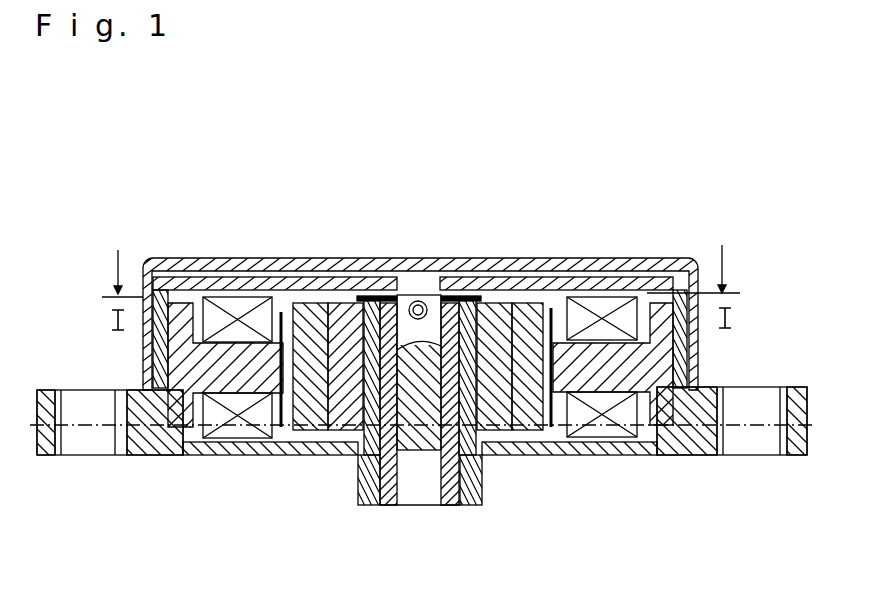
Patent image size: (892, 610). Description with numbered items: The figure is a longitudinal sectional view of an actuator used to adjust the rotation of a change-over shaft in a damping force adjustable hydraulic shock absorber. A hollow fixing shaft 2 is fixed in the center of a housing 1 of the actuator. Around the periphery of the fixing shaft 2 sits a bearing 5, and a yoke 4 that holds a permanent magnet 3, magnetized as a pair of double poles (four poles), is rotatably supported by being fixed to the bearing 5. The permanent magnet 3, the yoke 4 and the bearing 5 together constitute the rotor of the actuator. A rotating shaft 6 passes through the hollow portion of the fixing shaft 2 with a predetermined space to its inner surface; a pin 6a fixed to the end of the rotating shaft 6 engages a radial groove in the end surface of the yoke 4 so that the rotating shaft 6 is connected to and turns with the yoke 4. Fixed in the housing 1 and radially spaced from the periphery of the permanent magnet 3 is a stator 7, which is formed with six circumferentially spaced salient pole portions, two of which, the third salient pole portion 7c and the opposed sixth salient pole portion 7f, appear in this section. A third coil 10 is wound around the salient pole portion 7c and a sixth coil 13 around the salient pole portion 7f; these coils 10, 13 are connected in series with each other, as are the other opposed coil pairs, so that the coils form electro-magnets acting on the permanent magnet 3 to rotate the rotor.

The housing 1 is at (700, 447).
The fixing shaft 2 is at (381, 505).
The permanent magnet 3 is at (533, 315).
The yoke 4 is at (497, 367).
The bearing 5 is at (477, 383).
The rotating shaft 6 is at (418, 437).
The pin 6a is at (412, 300).
The stator 7 is at (177, 378).
The third salient pole portion 7c is at (230, 385).
The sixth salient pole portion 7f is at (623, 455).
The third coil 10 is at (237, 302).
The sixth coil 13 is at (608, 313).